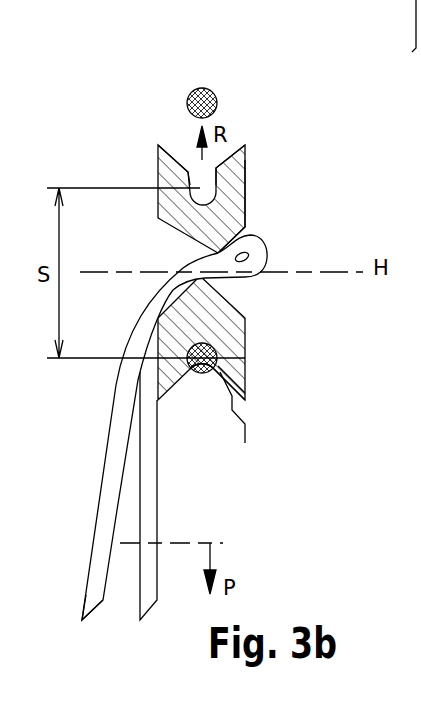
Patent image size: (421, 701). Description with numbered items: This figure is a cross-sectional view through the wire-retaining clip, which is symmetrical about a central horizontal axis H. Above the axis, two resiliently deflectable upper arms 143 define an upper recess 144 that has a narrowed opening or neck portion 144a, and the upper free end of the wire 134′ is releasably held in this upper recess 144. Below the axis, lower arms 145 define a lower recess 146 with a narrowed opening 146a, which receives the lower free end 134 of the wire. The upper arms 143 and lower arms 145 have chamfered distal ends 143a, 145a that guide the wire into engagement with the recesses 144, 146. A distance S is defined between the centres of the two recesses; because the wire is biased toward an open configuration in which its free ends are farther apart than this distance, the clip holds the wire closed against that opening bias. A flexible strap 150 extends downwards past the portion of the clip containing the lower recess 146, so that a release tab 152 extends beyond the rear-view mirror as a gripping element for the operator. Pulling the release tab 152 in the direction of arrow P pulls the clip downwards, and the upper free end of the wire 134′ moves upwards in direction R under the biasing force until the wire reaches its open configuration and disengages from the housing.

The lower free end of the wire 134 is at (218, 349).
The upper free end of the wire 134′ is at (199, 91).
The upper arms 143 is at (165, 167).
The chamfered distal ends of the upper arms 143a is at (172, 153).
The upper recess 144 is at (248, 205).
The narrowed opening 144a is at (247, 178).
The lower arms 145 is at (243, 387).
The chamfered distal ends of the lower arms 145a is at (243, 421).
The lower recess 146 is at (205, 333).
The narrowed opening 146a is at (220, 368).
The flexible strap 150 is at (125, 405).
The release tab 152 is at (90, 603).